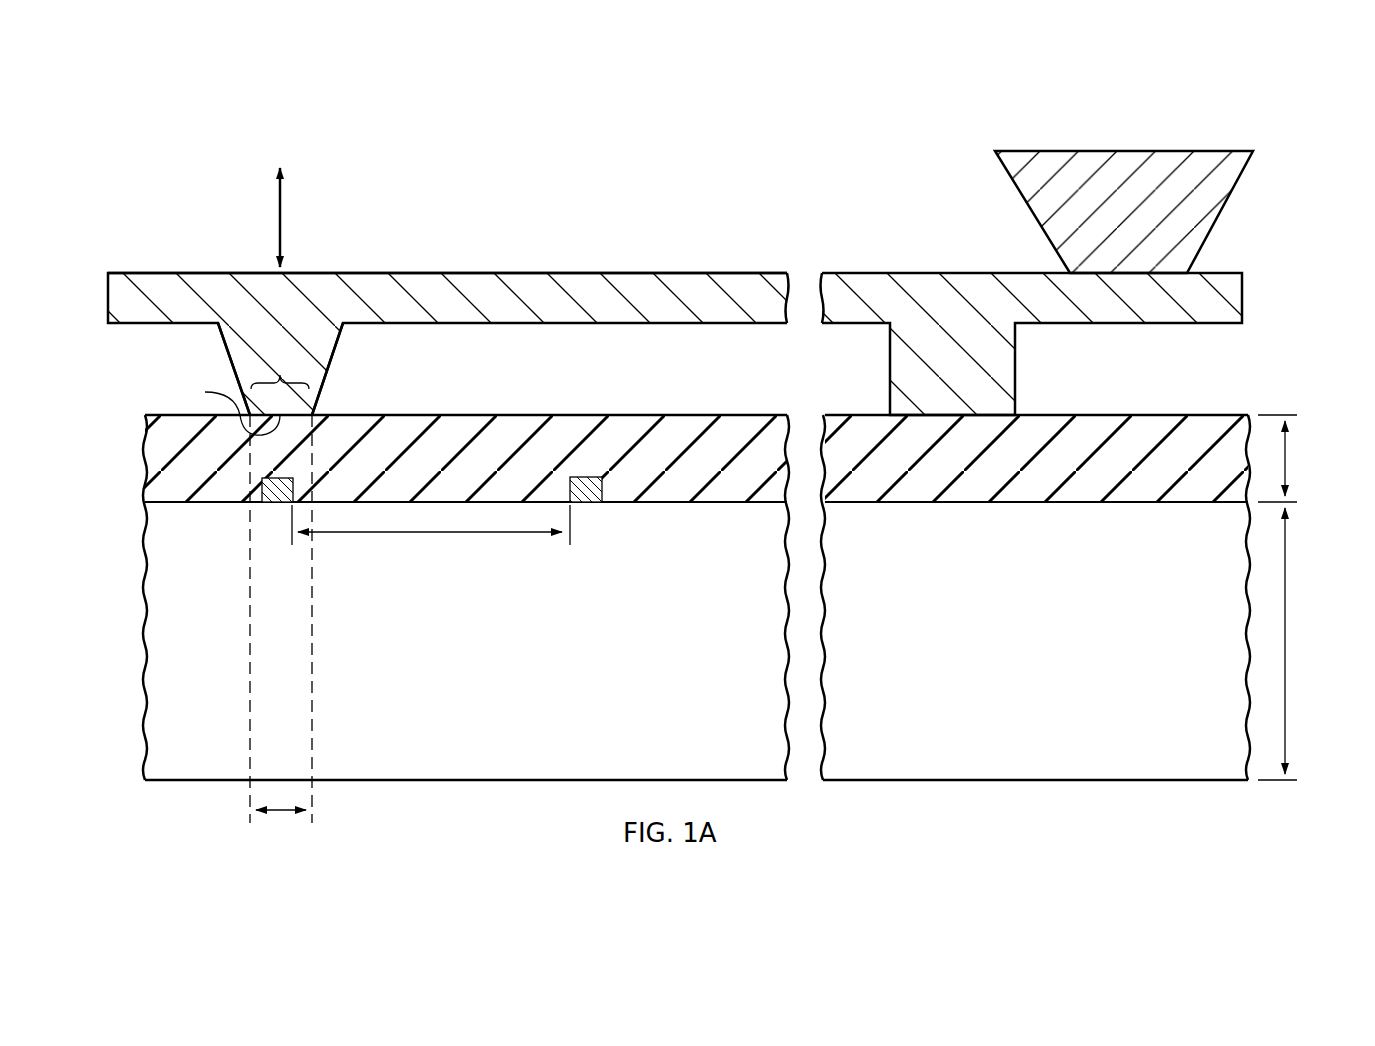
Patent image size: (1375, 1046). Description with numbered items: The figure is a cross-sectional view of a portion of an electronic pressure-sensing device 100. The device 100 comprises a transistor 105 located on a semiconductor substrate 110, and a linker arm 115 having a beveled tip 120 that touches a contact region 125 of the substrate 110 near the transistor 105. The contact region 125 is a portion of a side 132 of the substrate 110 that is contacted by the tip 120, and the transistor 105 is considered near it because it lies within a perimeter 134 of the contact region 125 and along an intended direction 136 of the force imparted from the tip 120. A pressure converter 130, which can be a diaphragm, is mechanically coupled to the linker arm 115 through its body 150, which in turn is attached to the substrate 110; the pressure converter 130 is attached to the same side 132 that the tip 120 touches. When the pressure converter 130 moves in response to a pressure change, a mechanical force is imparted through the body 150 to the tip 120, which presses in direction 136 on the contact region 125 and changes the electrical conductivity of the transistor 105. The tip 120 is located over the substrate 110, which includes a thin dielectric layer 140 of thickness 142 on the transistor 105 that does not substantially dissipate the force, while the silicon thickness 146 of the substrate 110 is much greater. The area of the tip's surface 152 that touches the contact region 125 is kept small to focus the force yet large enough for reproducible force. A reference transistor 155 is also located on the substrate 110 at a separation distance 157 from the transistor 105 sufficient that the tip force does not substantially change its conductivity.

The electronic pressure-sensing device 100 is at (508, 92).
The transistor 105 is at (280, 505).
The semiconductor substrate 110 is at (563, 630).
The linker arm 115 is at (108, 300).
The tip 120 is at (335, 346).
The contact region 125 is at (280, 364).
The pressure converter 130 is at (1130, 151).
The side of the substrate 132 is at (522, 415).
The perimeter of the contact region 134 is at (275, 815).
The intended direction of the force 136 is at (278, 218).
The dielectric layer 140 is at (1210, 415).
The thickness of the dielectric layer 142 is at (1285, 458).
The silicon thickness 146 is at (1285, 640).
The body 150 is at (461, 266).
The tip surface 152 is at (217, 407).
The reference transistor 155 is at (587, 505).
The separation distance 157 is at (440, 540).